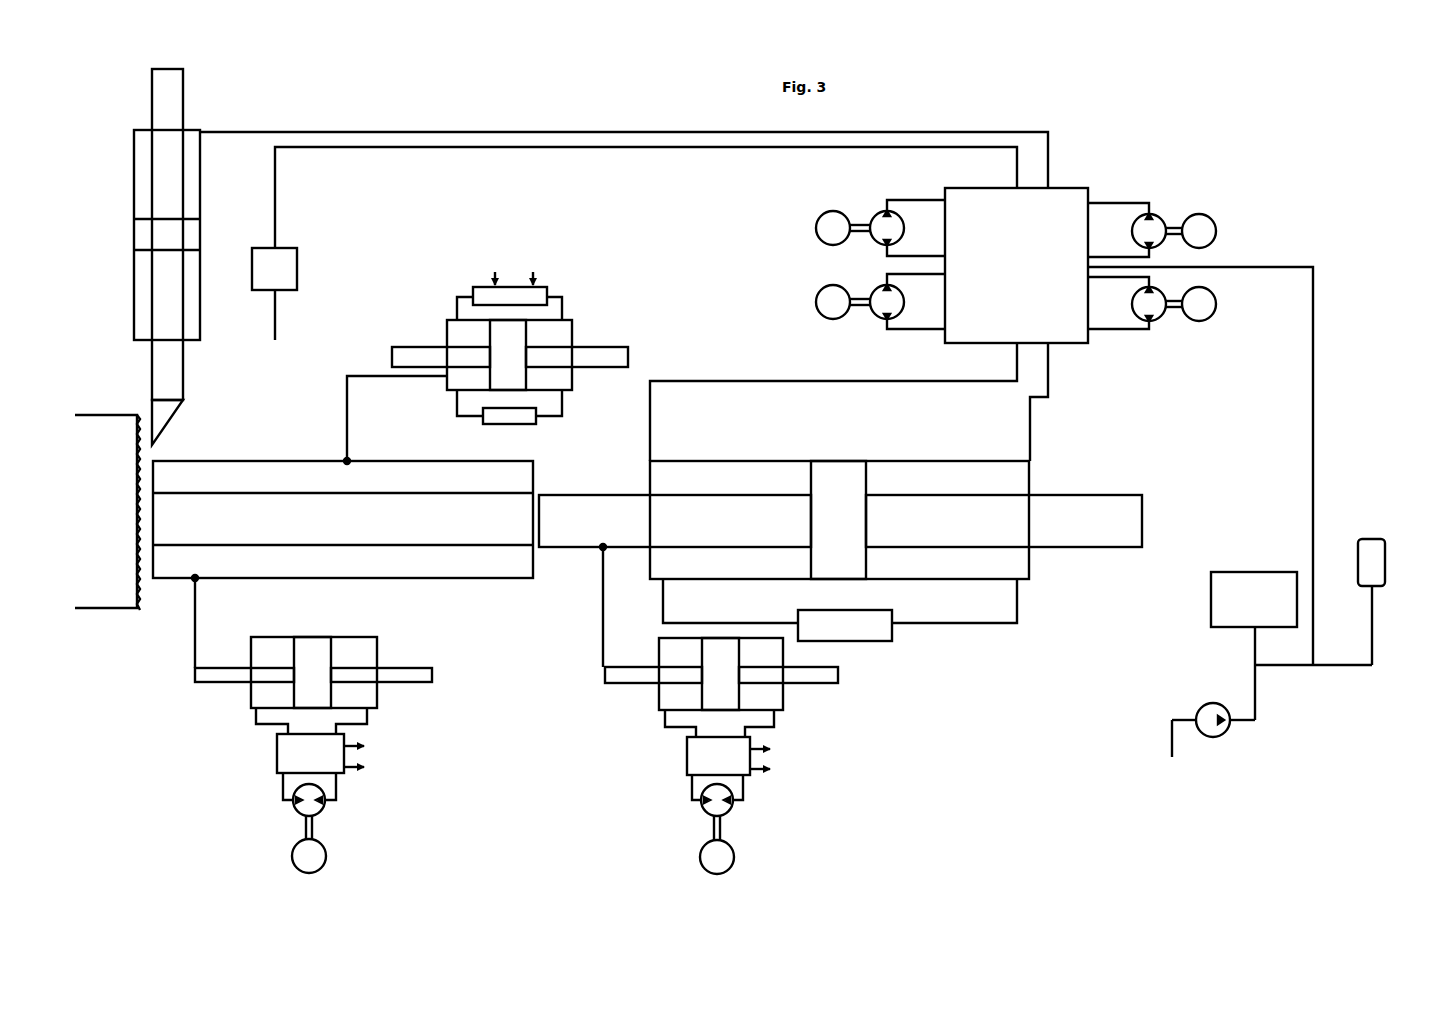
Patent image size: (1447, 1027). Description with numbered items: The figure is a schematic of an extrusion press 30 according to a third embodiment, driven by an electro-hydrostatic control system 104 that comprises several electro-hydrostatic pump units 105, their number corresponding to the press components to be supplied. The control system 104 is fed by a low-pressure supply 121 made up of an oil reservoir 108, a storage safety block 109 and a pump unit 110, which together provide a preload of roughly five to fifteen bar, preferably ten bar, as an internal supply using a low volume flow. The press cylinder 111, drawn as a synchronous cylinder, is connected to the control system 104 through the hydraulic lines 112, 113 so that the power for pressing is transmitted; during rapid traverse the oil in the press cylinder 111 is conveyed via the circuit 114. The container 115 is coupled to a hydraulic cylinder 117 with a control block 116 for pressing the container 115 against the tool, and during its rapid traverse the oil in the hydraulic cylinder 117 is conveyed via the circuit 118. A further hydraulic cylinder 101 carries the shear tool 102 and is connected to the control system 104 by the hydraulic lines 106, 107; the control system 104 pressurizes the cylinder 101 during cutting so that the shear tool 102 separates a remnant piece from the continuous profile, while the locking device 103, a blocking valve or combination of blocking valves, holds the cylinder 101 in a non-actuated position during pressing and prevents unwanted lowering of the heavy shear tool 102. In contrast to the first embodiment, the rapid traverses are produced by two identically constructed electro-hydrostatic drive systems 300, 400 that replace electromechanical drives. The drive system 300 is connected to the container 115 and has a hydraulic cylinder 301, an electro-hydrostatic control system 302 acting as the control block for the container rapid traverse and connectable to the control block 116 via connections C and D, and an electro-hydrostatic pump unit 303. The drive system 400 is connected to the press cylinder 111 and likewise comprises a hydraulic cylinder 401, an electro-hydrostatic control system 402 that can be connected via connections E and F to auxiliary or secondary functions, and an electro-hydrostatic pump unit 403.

The extrusion press 30 is at (1099, 121).
The hydraulic cylinder 101 is at (200, 198).
The shear tool 102 is at (170, 418).
The locking device 103 is at (297, 268).
The electro-hydrostatic control system 104 is at (1065, 212).
The electro-hydrostatic pump unit 105 is at (816, 225).
The hydraulic line 106 is at (275, 194).
The hydraulic line 107 is at (372, 130).
The oil reservoir 108 is at (1385, 552).
The storage safety block 109 is at (1211, 605).
The pump unit 110 is at (1199, 707).
The press cylinder 111 is at (1029, 478).
The hydraulic line 112 is at (650, 425).
The hydraulic line 113 is at (1048, 392).
The circuit 114 is at (845, 641).
The container 115 is at (432, 582).
The control block 116 is at (547, 296).
The hydraulic cylinder 117 is at (572, 355).
The circuit 118 is at (515, 424).
The low-pressure supply 121 is at (1339, 518).
The electro-hydrostatic drive system 300 is at (401, 801).
The hydraulic cylinder 301 is at (377, 652).
The electro-hydrostatic control system 302 is at (277, 758).
The electro-hydrostatic pump unit 303 is at (320, 872).
The electro-hydrostatic drive system 400 is at (834, 777).
The hydraulic cylinder 401 is at (783, 700).
The electro-hydrostatic control system 402 is at (683, 758).
The electro-hydrostatic pump unit 403 is at (728, 873).